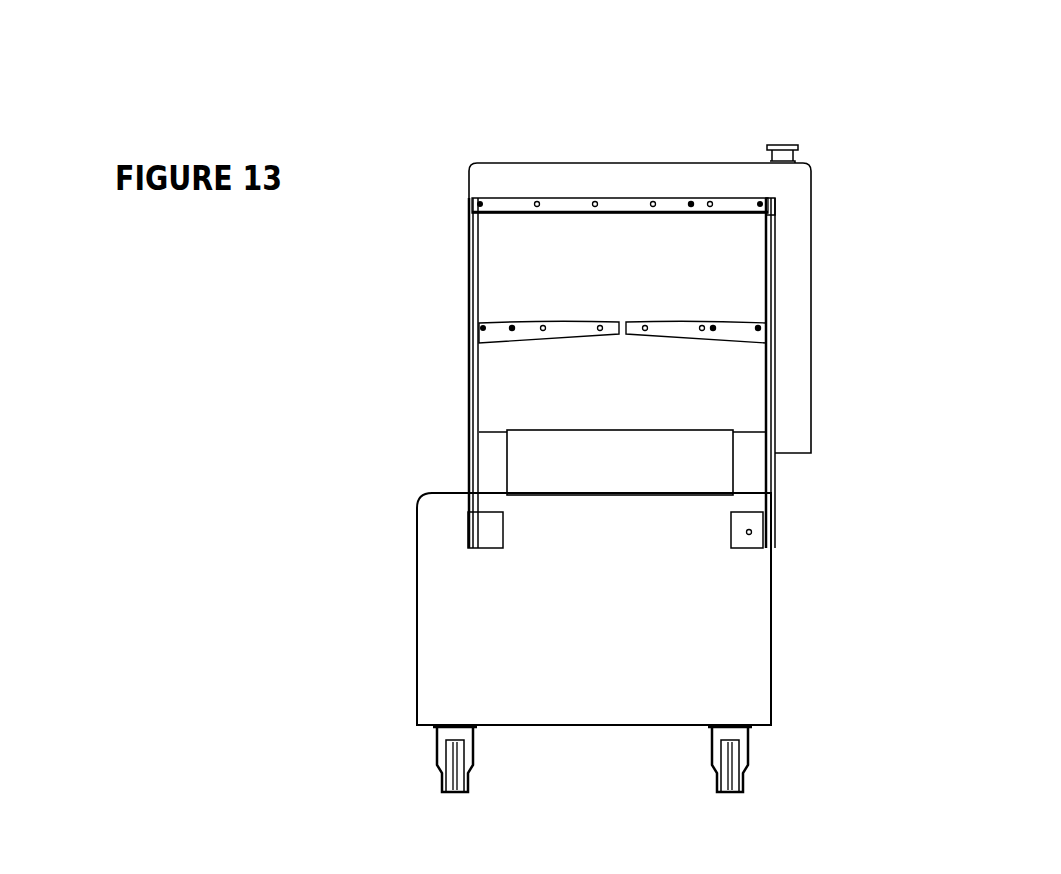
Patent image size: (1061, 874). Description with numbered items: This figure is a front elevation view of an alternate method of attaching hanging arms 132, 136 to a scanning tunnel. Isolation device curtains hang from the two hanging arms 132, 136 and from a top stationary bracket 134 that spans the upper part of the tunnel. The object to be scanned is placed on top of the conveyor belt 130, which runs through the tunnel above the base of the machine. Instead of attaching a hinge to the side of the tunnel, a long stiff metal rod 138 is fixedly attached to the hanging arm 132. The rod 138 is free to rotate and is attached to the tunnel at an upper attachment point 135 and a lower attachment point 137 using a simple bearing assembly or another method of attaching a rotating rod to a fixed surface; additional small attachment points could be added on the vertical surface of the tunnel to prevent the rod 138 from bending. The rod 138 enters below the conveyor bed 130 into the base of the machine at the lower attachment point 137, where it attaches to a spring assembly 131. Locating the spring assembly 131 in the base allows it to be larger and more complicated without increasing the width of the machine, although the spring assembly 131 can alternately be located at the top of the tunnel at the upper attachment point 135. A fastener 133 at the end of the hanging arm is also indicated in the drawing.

The conveyor belt 130 is at (702, 428).
The spring assembly 131 is at (749, 532).
The hanging arm 132 is at (713, 328).
The fastener 133 is at (760, 328).
The top stationary bracket 134 is at (691, 204).
The attachment point 135 is at (777, 197).
The hanging arm 136 is at (512, 328).
The attachment point 137 is at (777, 428).
The rod 138 is at (777, 240).